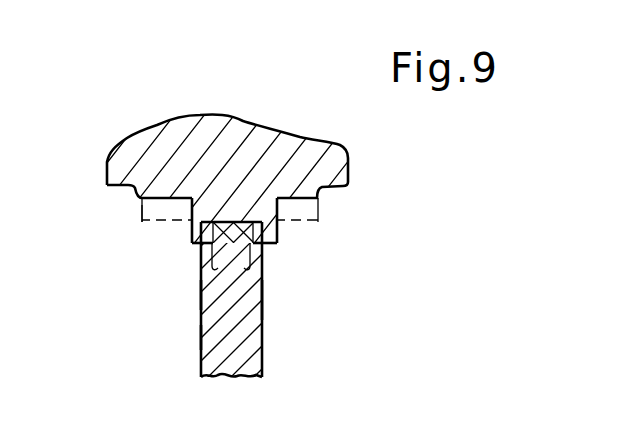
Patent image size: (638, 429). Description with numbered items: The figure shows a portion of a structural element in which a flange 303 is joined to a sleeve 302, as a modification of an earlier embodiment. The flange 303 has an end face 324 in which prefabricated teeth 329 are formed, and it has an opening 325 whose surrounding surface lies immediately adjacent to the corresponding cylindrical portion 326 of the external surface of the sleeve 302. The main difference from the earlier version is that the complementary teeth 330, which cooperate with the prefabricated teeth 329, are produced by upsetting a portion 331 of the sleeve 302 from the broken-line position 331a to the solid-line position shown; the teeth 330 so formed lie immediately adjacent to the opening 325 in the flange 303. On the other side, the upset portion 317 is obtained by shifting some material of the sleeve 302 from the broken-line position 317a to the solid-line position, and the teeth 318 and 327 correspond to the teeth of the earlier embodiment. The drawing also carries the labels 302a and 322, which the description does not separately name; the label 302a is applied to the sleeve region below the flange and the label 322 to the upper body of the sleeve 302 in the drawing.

The sleeve 302 is at (165, 167).
The sleeve portion of valve head 302a is at (262, 305).
The flange 303 is at (201, 370).
The upset portion 317 is at (278, 228).
The broken-line position 317a is at (320, 209).
The teeth 318 is at (265, 260).
The seat surface 322 is at (210, 222).
The end face 324 is at (201, 338).
The opening 325 is at (233, 222).
The cylindrical portion 326 is at (201, 293).
The teeth 327 is at (278, 244).
The prefabricated teeth 329 is at (201, 258).
The complementary teeth 330 is at (194, 248).
The upset portion of sleeve 331 is at (192, 238).
The broken-line position 331a is at (141, 208).